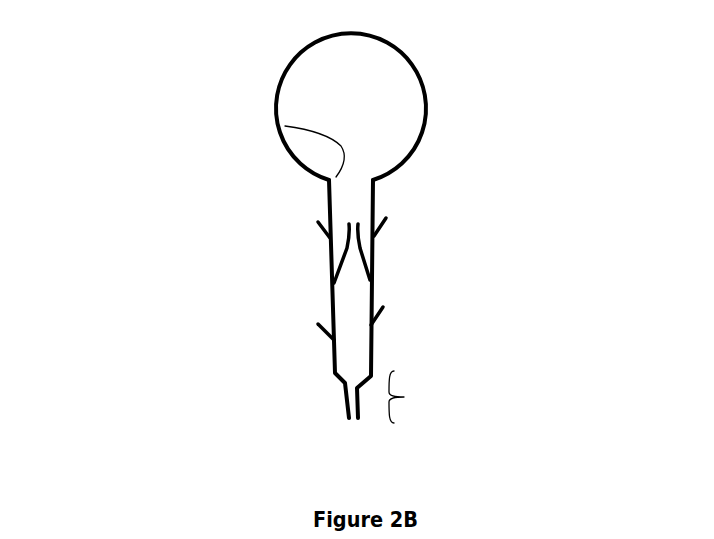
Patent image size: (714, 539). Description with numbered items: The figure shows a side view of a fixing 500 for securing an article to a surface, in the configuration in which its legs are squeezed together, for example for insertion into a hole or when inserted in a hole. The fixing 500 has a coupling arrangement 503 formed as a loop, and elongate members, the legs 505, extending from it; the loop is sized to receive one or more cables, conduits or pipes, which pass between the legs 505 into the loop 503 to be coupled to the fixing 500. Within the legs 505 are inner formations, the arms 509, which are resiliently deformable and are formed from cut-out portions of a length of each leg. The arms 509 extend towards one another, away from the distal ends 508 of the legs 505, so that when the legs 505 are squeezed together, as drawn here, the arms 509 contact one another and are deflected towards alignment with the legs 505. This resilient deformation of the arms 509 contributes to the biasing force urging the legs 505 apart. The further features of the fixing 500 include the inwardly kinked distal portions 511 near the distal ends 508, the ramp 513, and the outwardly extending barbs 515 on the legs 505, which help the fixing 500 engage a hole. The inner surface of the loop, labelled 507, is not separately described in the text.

The fixing 500 is at (128, 98).
The coupling arrangement 503 is at (423, 66).
The legs 505 is at (329, 224).
The inner surface of loop 507 is at (285, 126).
The distal ends 508 is at (347, 416).
The arms 509 is at (343, 253).
The inwardly kinked distal portions 511 is at (422, 397).
The ramp 513 is at (345, 376).
The outwardly extending barbs 515 is at (385, 224).